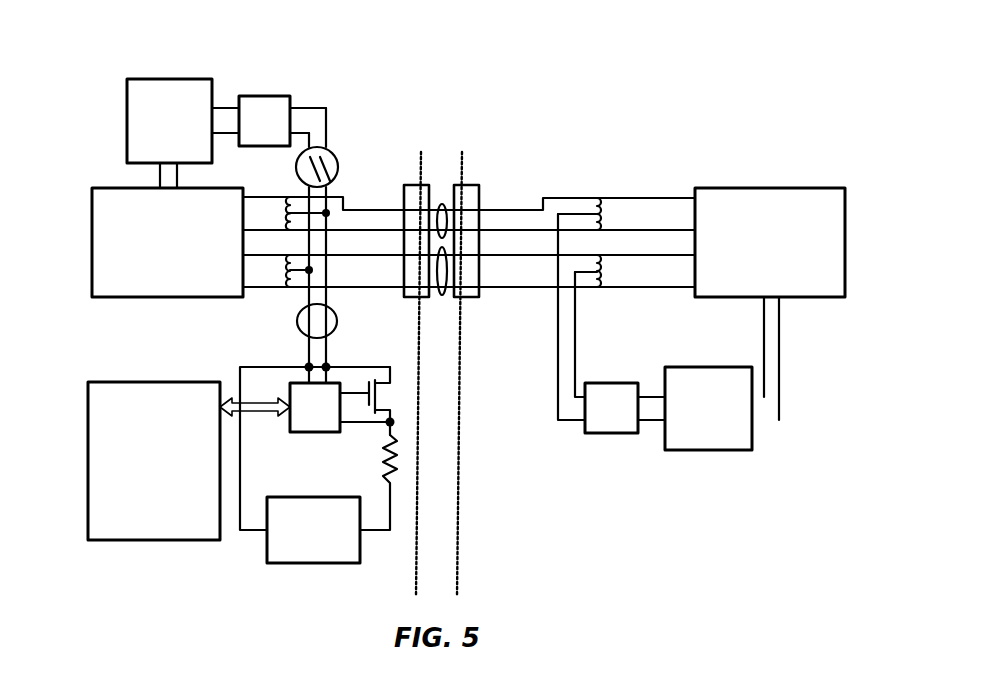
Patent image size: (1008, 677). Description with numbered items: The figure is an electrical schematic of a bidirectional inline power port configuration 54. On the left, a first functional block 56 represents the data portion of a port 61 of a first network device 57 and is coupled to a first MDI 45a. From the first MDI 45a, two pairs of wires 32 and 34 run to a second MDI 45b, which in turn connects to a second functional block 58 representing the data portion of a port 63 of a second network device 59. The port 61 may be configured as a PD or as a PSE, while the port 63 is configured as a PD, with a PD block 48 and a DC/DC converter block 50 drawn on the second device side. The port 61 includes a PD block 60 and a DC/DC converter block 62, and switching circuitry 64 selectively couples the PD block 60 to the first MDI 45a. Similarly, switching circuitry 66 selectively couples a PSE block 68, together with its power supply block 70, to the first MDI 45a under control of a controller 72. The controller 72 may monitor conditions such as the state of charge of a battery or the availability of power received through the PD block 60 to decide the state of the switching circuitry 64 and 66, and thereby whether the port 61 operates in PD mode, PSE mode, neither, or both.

The pair of wires 32 is at (442, 203).
The pair of wires 34 is at (442, 295).
The first MDI 45a is at (414, 185).
The second MDI 45b is at (466, 185).
The PD block 48 is at (612, 433).
The DC/DC converter block 50 is at (705, 450).
The bidirectional inline power port configuration 54 is at (599, 186).
The first functional block 56 is at (168, 297).
The first network device 57 is at (92, 242).
The second functional block 58 is at (812, 297).
The second network device 59 is at (845, 240).
The PD block 60 is at (262, 96).
The port 61 is at (228, 64).
The DC/DC converter block 62 is at (170, 79).
The port 63 is at (750, 134).
The switching circuitry 64 is at (333, 153).
The switching circuitry 66 is at (297, 322).
The PSE block 68 is at (315, 432).
The power supply block 70 is at (315, 563).
The controller 72 is at (88, 466).